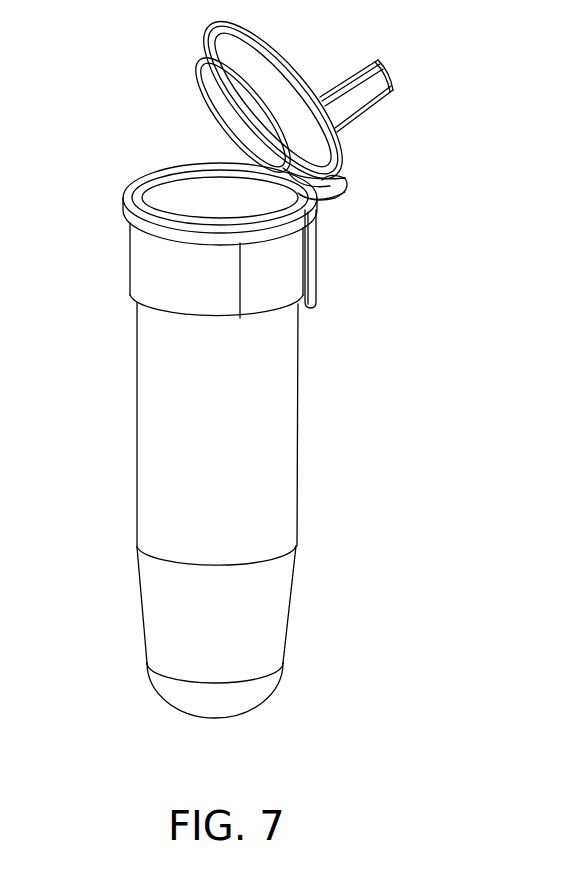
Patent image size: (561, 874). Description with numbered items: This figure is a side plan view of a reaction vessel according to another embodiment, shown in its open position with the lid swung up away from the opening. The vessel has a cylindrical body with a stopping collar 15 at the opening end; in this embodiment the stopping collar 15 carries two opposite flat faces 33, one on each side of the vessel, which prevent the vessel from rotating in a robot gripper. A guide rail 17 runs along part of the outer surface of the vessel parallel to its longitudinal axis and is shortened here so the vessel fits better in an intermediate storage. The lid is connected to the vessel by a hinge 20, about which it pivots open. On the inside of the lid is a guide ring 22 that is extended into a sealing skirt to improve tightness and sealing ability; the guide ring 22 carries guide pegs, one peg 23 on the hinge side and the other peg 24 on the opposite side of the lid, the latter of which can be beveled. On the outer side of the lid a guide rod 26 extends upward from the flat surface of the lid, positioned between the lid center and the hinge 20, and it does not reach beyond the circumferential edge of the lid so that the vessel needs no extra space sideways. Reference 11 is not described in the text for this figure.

The rim of container 11 is at (128, 198).
The stopping collar 15 is at (147, 255).
The guide rail 17 is at (272, 278).
The hinge 20 is at (343, 187).
The guide ring 22 is at (233, 63).
The guide peg 23 is at (263, 177).
The guide peg 24 is at (207, 70).
The guide rod 26 is at (382, 87).
The flat face 33 is at (302, 305).